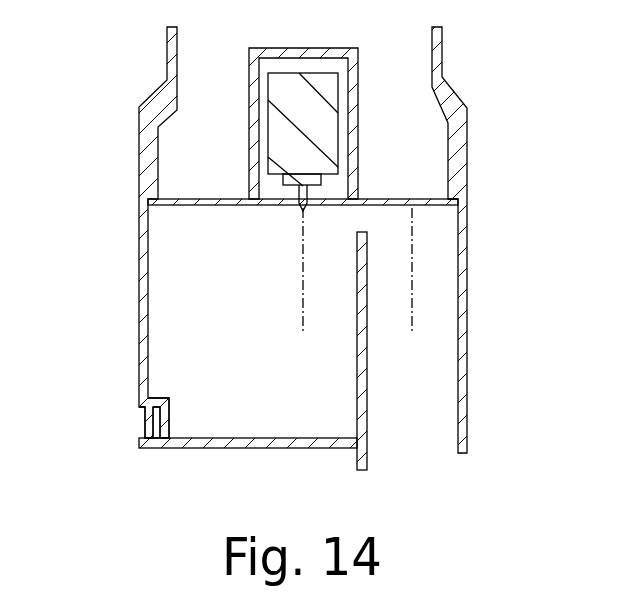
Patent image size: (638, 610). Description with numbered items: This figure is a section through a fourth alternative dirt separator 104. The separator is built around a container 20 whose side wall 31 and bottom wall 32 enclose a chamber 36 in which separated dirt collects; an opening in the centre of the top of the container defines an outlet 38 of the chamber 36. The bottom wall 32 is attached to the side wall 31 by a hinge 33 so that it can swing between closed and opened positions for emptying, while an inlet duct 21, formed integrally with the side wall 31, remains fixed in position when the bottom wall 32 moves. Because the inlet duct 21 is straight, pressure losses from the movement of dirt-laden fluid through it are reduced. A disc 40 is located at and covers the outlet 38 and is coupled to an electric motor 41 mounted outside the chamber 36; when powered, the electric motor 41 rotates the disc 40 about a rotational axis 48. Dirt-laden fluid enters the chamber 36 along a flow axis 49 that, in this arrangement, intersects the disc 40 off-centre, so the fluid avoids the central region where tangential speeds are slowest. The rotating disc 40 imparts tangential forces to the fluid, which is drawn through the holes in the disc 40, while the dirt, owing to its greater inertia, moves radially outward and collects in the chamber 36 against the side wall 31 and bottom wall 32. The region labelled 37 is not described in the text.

The dirt separator 104 is at (311, 257).
The container 20 is at (490, 240).
The inlet duct 21 is at (467, 348).
The side wall 31 is at (116, 232).
The bottom wall 32 is at (240, 448).
The hinge 33 is at (145, 407).
The chamber 36 is at (201, 305).
The second chamber 37 is at (428, 233).
The outlet 38 is at (431, 199).
The disc 40 is at (218, 205).
The electric motor 41 is at (282, 140).
The rotational axis 48 is at (303, 332).
The flow axis 49 is at (412, 332).